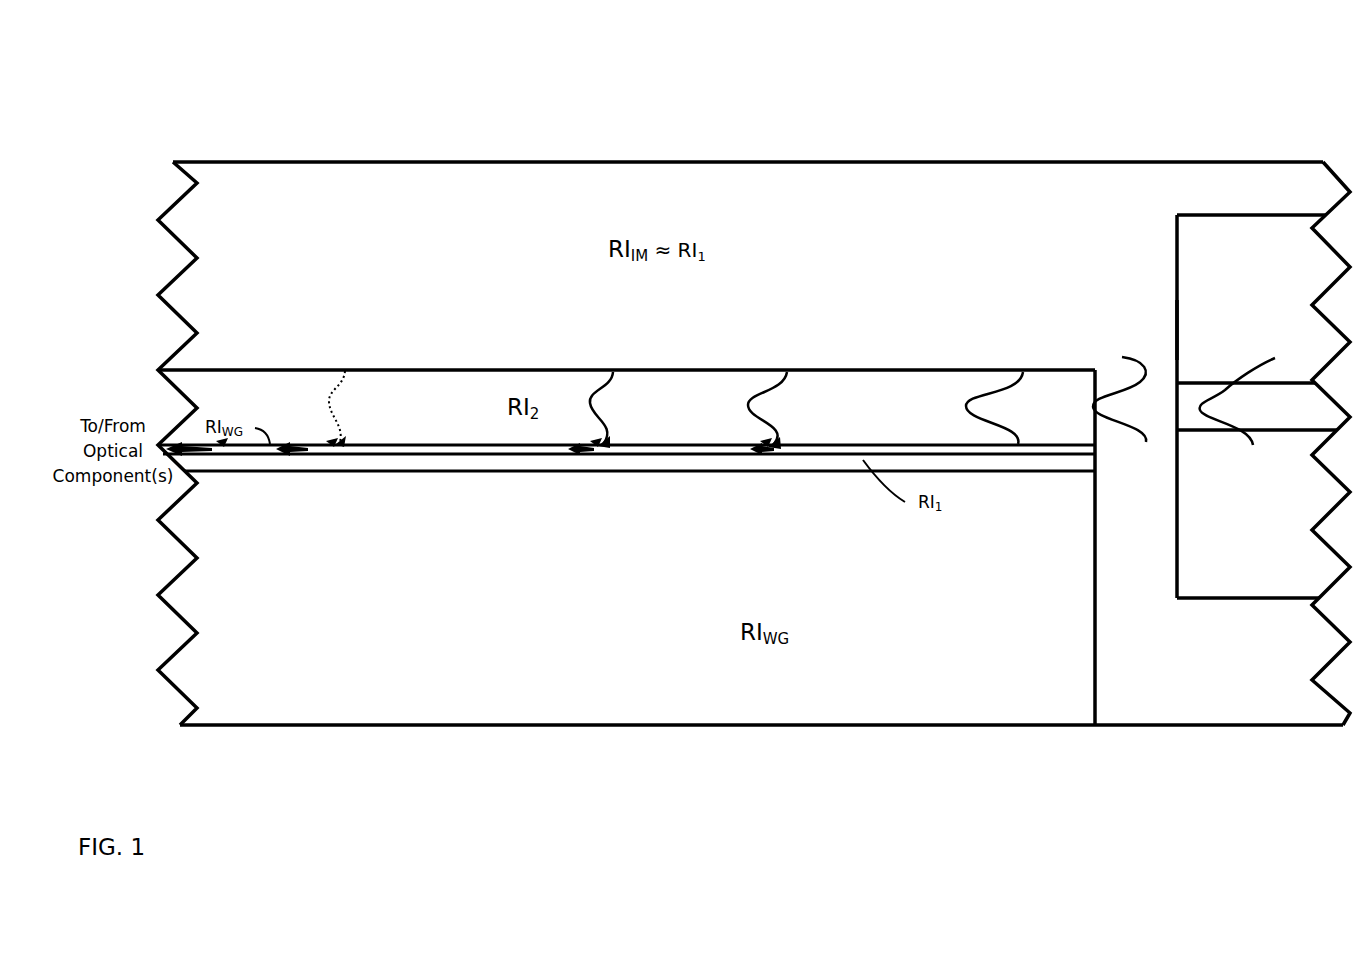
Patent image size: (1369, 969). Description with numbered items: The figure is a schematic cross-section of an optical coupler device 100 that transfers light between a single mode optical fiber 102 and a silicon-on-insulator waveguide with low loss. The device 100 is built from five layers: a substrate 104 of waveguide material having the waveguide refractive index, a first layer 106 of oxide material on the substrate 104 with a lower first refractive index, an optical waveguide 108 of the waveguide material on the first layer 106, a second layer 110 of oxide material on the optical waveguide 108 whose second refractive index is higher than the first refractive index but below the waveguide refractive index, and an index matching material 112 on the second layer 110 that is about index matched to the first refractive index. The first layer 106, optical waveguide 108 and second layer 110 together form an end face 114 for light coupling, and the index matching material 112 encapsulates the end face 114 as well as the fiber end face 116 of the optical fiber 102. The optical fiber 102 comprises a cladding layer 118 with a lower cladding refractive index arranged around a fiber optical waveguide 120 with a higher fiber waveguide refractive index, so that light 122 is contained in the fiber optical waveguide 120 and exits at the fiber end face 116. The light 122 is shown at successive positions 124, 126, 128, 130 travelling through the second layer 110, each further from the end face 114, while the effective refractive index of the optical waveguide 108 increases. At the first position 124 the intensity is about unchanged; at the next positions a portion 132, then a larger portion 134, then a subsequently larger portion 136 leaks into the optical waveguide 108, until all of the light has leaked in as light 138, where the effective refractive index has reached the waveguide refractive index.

The optical coupler device 100 is at (318, 60).
The single mode optical fiber 102 is at (1153, 212).
The substrate 104 is at (538, 724).
The first layer of oxide material 106 is at (457, 473).
The optical waveguide 108 is at (468, 444).
The second layer of oxide material 110 is at (487, 369).
The index matching material 112 is at (717, 161).
The end face 114 is at (1112, 444).
The fiber end face 116 is at (1165, 331).
The cladding layer 118 is at (1270, 215).
The fiber optical waveguide 120 is at (1312, 433).
The light 122 is at (1205, 396).
The first position 124 is at (968, 398).
The next position 126 is at (752, 397).
The next position 128 is at (592, 397).
The next position 130 is at (330, 405).
The portion of the light 132 is at (762, 460).
The larger portion of the light 134 is at (601, 460).
The subsequently larger portion of the light 136 is at (335, 460).
The light 138 is at (223, 460).